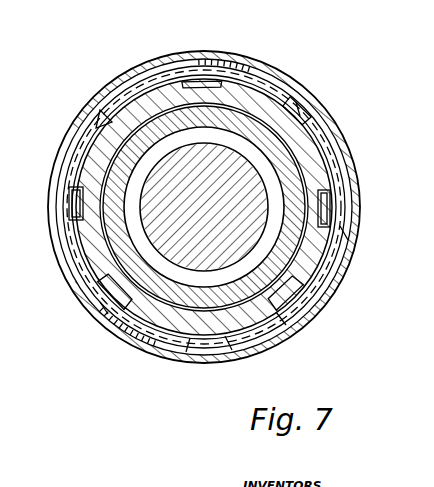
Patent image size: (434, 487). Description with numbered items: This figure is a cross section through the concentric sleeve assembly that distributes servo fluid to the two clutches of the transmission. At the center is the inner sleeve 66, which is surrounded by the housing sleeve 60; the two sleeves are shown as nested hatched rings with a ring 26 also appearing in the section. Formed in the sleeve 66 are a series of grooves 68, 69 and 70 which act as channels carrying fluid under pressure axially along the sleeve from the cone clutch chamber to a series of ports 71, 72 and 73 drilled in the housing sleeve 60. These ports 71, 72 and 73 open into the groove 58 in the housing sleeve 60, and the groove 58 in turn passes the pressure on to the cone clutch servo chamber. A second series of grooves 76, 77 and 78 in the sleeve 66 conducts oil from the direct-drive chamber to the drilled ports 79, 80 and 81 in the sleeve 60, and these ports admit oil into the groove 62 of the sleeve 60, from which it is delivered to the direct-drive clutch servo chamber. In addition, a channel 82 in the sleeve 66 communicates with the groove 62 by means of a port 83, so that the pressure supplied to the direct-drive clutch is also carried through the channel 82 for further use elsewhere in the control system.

The hatched sleeve ring 26 is at (80, 253).
The groove 58 is at (205, 72).
The housing sleeve 60 is at (257, 83).
The groove 62 is at (203, 262).
The sleeve 66 is at (148, 318).
The groove 68 is at (98, 127).
The groove 69 is at (78, 203).
The groove 70 is at (104, 285).
The port 71 is at (107, 128).
The port 72 is at (72, 192).
The port 73 is at (112, 318).
The groove 76 is at (286, 110).
The groove 77 is at (328, 188).
The groove 78 is at (275, 333).
The drilled port 79 is at (300, 114).
The drilled port 80 is at (347, 233).
The drilled port 81 is at (298, 316).
The channel 82 is at (233, 350).
The port 83 is at (187, 354).